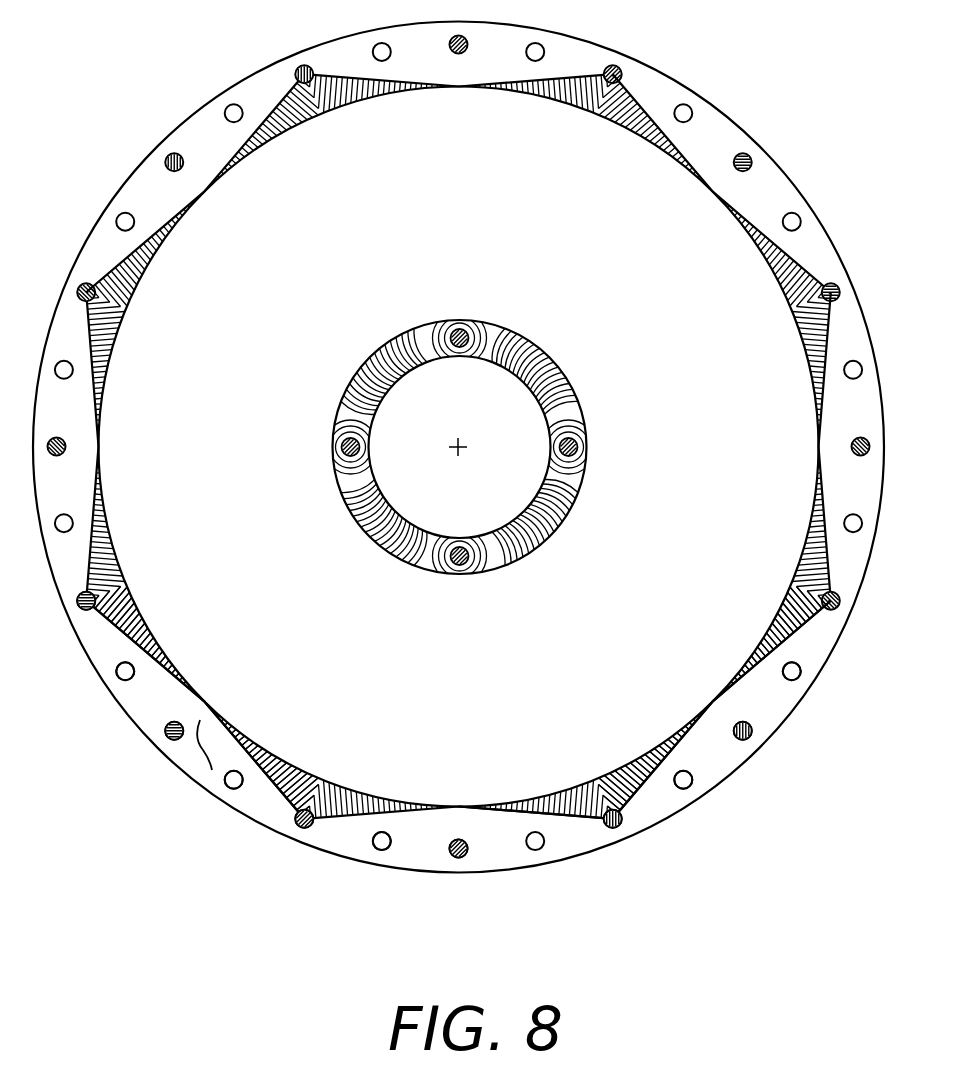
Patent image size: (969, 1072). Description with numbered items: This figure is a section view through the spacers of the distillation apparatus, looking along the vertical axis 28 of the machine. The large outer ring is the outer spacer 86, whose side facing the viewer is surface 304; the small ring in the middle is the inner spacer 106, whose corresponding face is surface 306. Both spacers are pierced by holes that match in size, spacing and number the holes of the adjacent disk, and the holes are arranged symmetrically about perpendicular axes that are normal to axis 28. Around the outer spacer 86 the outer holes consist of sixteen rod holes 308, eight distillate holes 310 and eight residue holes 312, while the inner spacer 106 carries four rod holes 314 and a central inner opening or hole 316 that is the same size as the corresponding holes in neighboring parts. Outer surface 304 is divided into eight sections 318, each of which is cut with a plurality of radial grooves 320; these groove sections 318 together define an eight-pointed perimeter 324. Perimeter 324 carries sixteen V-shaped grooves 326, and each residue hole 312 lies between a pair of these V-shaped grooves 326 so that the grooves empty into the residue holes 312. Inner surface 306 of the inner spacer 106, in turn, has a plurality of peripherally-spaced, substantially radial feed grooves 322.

The vertical axis 28 is at (467, 443).
The outer spacer 86 is at (228, 807).
The inner spacer 106 is at (363, 530).
The surface 304 is at (202, 750).
The surface 306 is at (353, 480).
The rod holes 308 is at (382, 851).
The distillate holes 310 is at (463, 857).
The residue holes 312 is at (301, 828).
The rod holes 314 is at (458, 570).
The inner opening 316 is at (412, 528).
The sections 318 is at (115, 583).
The radial grooves 320 is at (130, 612).
The feed grooves 322 is at (587, 468).
The eight-pointed perimeter 324 is at (653, 782).
The V-shaped grooves 326 is at (632, 812).